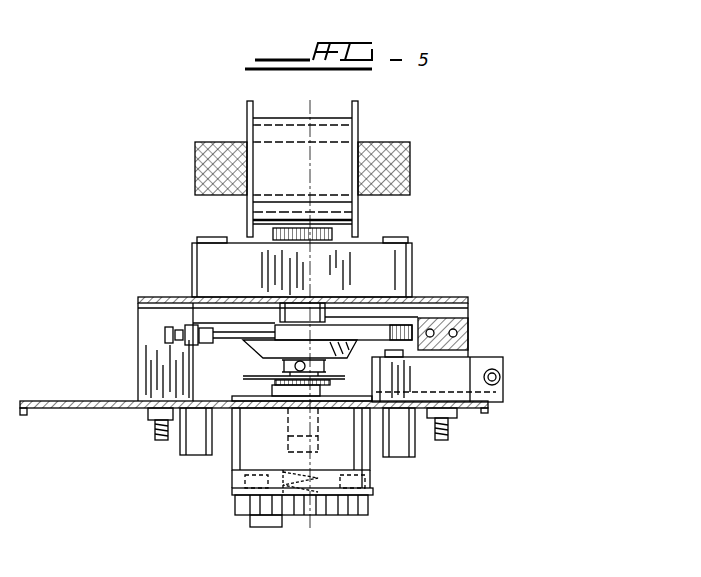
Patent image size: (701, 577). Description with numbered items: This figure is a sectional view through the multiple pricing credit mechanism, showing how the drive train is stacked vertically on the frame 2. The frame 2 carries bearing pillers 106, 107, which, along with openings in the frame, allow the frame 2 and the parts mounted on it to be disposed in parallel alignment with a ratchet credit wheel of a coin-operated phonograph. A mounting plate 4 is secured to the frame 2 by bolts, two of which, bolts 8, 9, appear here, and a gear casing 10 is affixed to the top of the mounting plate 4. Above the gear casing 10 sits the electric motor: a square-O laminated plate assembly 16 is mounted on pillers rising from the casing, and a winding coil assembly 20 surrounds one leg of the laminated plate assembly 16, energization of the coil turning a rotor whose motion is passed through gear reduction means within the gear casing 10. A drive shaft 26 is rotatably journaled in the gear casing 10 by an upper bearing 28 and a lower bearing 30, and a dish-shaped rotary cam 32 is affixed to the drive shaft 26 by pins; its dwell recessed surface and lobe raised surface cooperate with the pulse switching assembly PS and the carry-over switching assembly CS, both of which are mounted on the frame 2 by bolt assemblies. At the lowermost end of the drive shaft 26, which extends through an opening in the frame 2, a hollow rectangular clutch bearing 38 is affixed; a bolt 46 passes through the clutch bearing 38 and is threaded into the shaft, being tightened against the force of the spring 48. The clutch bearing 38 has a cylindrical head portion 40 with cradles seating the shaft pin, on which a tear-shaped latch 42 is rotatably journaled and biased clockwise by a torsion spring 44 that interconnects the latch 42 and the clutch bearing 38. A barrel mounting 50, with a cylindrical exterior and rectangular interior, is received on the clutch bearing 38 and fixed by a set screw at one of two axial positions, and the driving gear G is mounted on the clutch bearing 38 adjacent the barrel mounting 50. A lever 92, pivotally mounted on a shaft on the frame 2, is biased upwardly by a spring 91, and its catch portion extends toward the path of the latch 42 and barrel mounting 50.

The frame 2 is at (72, 401).
The mounting plate 4 is at (171, 300).
The bolt 8 is at (449, 431).
The bolt 9 is at (157, 437).
The gear casing 10 is at (400, 282).
The laminated plate assembly 16 is at (202, 169).
The winding coil assembly 20 is at (290, 127).
The drive shaft 26 is at (320, 448).
The upper bearing 28 is at (303, 236).
The lower bearing 30 is at (324, 311).
The rotary cam 32 is at (229, 319).
The clutch bearing 38 is at (283, 408).
The cylindrical head portion 40 is at (318, 372).
The tear-shaped latch 42 is at (277, 376).
The torsion spring 44 is at (276, 383).
The bolt 46 is at (300, 461).
The spring 48 is at (318, 470).
The barrel mounting 50 is at (244, 458).
The spring 91 is at (502, 383).
The lever 92 is at (474, 360).
The bearing piller 106 is at (400, 450).
The bearing piller 107 is at (192, 447).
The carry-over switching assembly CS is at (186, 351).
The pulse switching assembly PS is at (407, 332).
The driving gear G is at (362, 497).